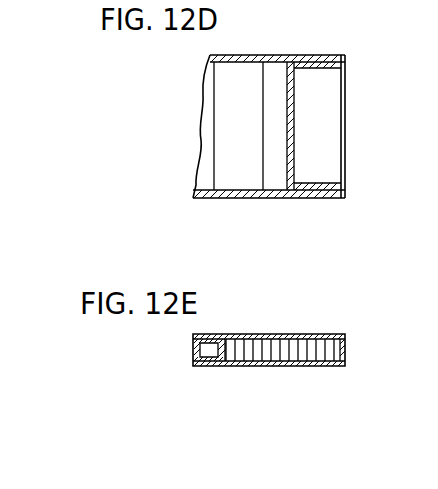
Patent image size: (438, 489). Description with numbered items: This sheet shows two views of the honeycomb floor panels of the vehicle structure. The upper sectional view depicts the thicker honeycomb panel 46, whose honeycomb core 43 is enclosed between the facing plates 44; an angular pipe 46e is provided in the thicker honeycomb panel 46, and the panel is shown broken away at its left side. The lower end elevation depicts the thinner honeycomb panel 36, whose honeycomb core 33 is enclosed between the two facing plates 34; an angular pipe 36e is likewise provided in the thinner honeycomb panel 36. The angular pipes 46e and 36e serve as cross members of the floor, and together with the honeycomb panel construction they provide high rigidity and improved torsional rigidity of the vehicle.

In FIG. 12D, the honeycomb core 43 is at (207, 94).
In FIG. 12D, the facing plates 44 is at (290, 37).
In FIG. 12D, the thicker honeycomb panel 46 is at (207, 137).
In FIG. 12D, the angular pipe 46e is at (347, 128).
In FIG. 12E, the honeycomb core 33 is at (302, 365).
In FIG. 12E, the facing plates 34 is at (302, 317).
In FIG. 12E, the thinner honeycomb panel 36 is at (235, 367).
In FIG. 12E, the angular pipe 36e is at (192, 351).